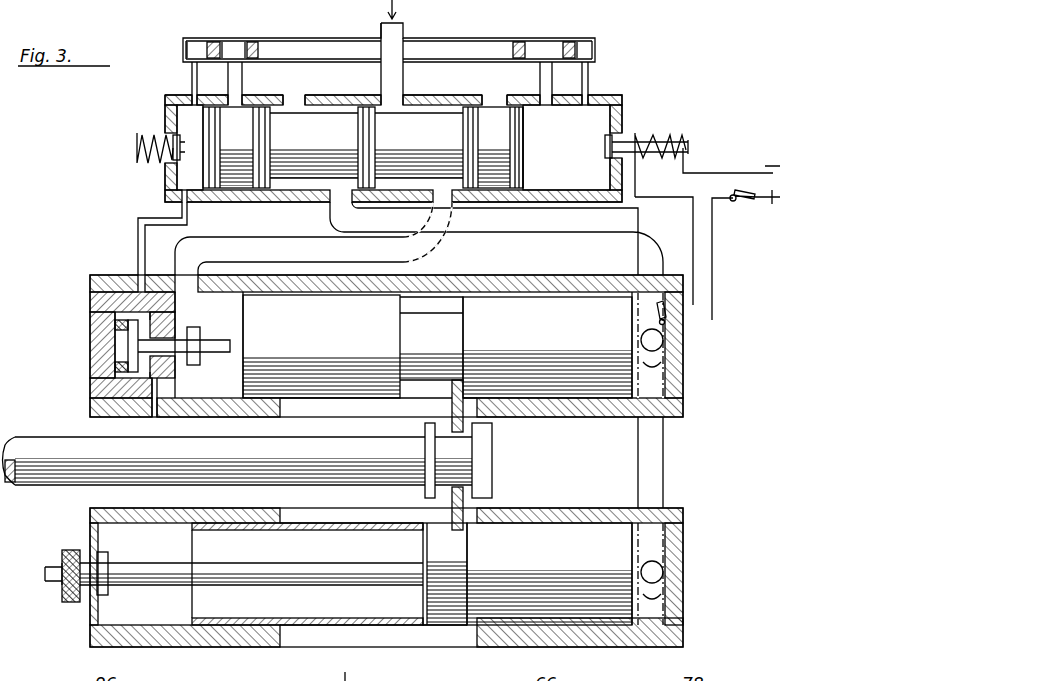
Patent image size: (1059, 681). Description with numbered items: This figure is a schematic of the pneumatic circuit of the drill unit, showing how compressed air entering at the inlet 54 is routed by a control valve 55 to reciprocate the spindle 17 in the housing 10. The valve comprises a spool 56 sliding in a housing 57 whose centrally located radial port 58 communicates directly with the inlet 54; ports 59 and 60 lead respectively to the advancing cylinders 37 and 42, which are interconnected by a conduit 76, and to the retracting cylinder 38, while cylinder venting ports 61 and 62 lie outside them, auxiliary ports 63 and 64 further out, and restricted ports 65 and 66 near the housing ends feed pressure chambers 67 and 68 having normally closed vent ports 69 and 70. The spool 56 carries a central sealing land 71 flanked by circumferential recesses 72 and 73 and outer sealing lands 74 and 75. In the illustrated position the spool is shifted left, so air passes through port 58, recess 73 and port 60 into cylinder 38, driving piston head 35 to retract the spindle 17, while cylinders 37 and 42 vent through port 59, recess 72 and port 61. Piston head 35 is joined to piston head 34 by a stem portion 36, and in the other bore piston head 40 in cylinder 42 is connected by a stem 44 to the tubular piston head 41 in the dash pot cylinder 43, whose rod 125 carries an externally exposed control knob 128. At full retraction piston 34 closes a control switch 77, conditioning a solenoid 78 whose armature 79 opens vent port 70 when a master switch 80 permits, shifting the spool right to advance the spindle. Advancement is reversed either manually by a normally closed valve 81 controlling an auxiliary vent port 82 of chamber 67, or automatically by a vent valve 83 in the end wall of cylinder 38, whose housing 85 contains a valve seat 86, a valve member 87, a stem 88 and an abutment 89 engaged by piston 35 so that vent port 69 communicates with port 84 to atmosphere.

The housing 10 is at (693, 518).
The spindle 17 is at (260, 460).
The piston head 34 is at (562, 319).
The piston head 35 is at (324, 325).
The stem portion 36 is at (442, 335).
The cylinder 37 is at (668, 372).
The cylinder 38 is at (232, 311).
The piston head 40 is at (567, 554).
The piston head 41 is at (355, 532).
The cylinder 42 is at (655, 595).
The cylinder 43 is at (164, 609).
The stem 44 is at (456, 568).
The inlet 54 is at (404, 32).
The control valve 55 is at (417, 133).
The spool 56 is at (526, 138).
The housing 57 is at (620, 116).
The radial port 58 is at (404, 78).
The port 59 is at (332, 210).
The port 60 is at (440, 250).
The cylinder venting port 61 is at (296, 96).
The cylinder venting port 62 is at (490, 99).
The auxiliary port 63 is at (243, 93).
The auxiliary port 64 is at (549, 92).
The restricted port 65 is at (192, 70).
The restricted port 66 is at (589, 80).
The pressure chamber 67 is at (190, 147).
The pressure chamber 68 is at (582, 173).
The vent port 69 is at (150, 214).
The vent port 70 is at (616, 141).
The sealing land 71 is at (360, 181).
The circumferential recess 72 is at (320, 141).
The circumferential recess 73 is at (424, 141).
The sealing land 74 is at (246, 138).
The sealing land 75 is at (500, 137).
The conduit 76 is at (656, 441).
The control switch 77 is at (658, 308).
The solenoid 78 is at (683, 136).
The armature 79 is at (692, 148).
The master switch 80 is at (731, 200).
The valve 81 is at (127, 180).
The auxiliary vent port 82 is at (162, 138).
The vent valve 83 is at (359, 357).
The port 84 is at (160, 414).
The housing 85 is at (100, 386).
The valve seat 86 is at (186, 326).
The valve member 87 is at (128, 344).
The stem 88 is at (222, 350).
The abutment 89 is at (193, 365).
The rod 125 is at (184, 571).
The control knob 128 is at (72, 550).